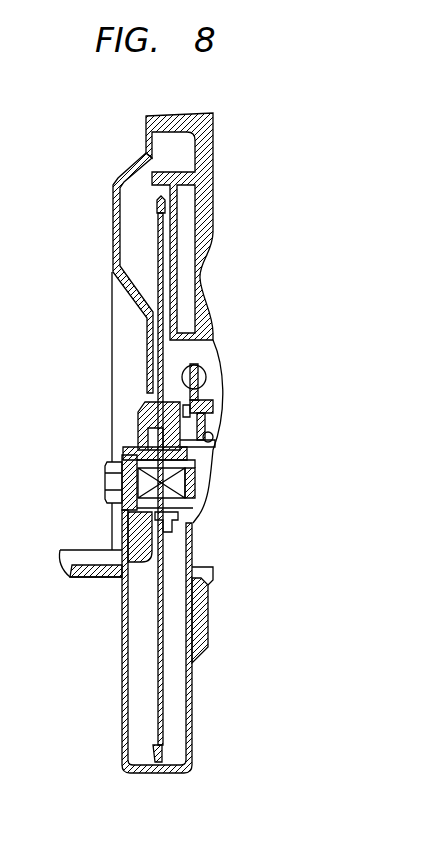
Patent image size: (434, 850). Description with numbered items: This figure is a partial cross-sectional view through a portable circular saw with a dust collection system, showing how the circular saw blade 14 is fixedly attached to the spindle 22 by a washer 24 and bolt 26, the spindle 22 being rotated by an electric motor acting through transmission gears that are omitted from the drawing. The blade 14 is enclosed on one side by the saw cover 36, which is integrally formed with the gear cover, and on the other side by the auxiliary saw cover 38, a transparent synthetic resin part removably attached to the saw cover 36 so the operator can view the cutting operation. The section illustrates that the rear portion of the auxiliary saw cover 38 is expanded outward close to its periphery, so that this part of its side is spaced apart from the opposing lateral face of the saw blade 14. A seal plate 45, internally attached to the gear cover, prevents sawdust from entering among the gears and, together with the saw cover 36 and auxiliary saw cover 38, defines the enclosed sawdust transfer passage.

The saw cover 36 is at (185, 114).
The circular saw blade 14 is at (158, 198).
The seal plate 45 is at (163, 233).
The auxiliary saw cover 38 is at (113, 244).
The washer 24 is at (143, 410).
The spindle 22 is at (140, 444).
The bolt 26 is at (112, 483).